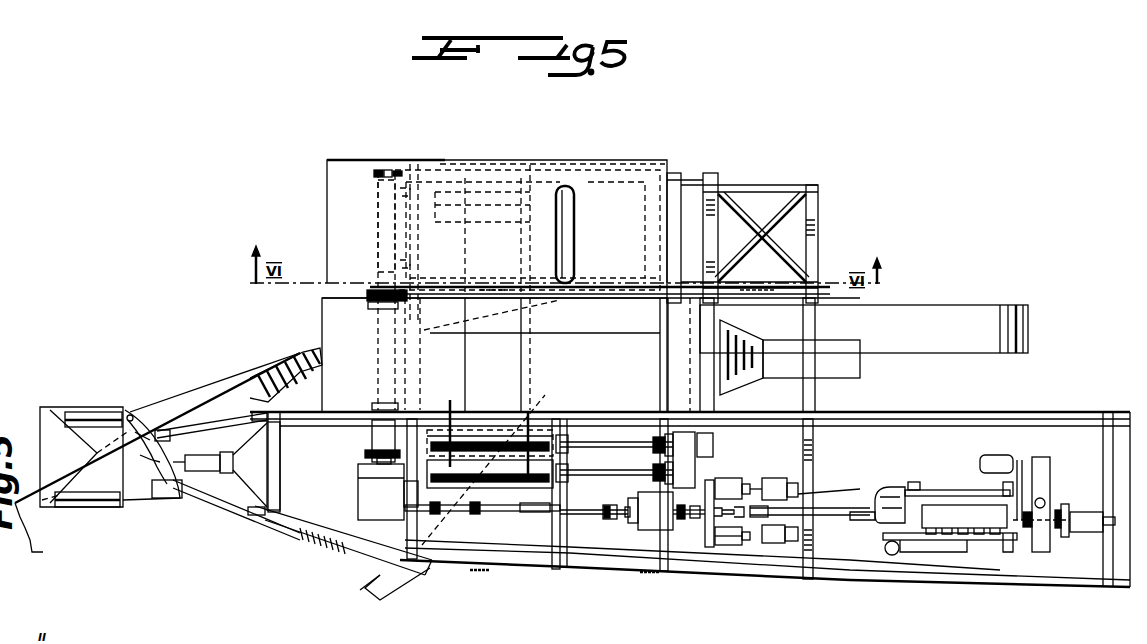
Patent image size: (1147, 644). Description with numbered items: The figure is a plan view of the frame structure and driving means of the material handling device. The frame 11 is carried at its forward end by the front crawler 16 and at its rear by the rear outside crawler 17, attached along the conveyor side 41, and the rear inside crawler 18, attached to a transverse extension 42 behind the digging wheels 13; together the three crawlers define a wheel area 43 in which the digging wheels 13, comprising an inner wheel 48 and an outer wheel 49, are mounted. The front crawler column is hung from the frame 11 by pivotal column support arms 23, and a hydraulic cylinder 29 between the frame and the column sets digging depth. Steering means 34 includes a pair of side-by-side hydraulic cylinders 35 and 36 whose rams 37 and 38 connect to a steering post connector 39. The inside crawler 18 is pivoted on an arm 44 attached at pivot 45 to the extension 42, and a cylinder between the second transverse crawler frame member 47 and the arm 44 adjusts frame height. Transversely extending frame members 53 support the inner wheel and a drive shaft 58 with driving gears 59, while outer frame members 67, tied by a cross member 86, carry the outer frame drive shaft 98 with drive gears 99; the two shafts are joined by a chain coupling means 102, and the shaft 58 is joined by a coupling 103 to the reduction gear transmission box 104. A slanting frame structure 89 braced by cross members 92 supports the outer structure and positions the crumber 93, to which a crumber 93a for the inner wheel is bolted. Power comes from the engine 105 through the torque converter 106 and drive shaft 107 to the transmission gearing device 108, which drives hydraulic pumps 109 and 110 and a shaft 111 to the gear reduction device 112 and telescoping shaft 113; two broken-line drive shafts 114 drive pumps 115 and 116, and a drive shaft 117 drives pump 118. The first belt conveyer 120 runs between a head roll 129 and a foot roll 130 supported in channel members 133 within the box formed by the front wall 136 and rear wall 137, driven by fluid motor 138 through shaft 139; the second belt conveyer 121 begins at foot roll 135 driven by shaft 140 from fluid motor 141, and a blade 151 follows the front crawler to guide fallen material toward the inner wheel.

The frame 11 is at (665, 582).
The digging wheels 13 is at (322, 323).
The front transporting and propelling means 16 is at (45, 537).
The rear outside crawler 17 is at (848, 582).
The rear inside crawler 18 is at (963, 312).
The column support arms 23 is at (244, 416).
The hydraulic cylinder 29 is at (205, 472).
The steering means 34 is at (86, 400).
The hydraulic cylinder 35 is at (100, 412).
The hydraulic cylinder 36 is at (92, 510).
The ram 37 is at (130, 409).
The ram 38 is at (165, 500).
The steering post connector 39 is at (143, 438).
The conveyor side 41 is at (600, 570).
The transverse extension 42 is at (714, 411).
The wheel area 43 is at (651, 163).
The arm 44 is at (790, 355).
The pivot 45 is at (722, 330).
The second transverse crawler frame member 47 is at (815, 402).
The inner wheel 48 is at (307, 356).
The outer wheel 49 is at (328, 195).
The transversely extending frame members 53 is at (410, 362).
The drive shaft 58 is at (378, 338).
The driving gears 59 is at (372, 318).
The outer frame members 67 is at (413, 166).
The cross member 86 is at (492, 170).
The slanting frame structure 89 is at (708, 244).
The cross members 92 is at (785, 220).
The crumber 93 is at (672, 175).
The crumber 93a is at (660, 402).
The outer frame drive shaft 98 is at (385, 229).
The drive gears 99 is at (383, 170).
The coupling means 102 is at (372, 296).
The coupling 103 is at (366, 453).
The reduction gear transmission box 104 is at (358, 501).
The internal combustion engine 105 is at (943, 490).
The torque converter 106 is at (884, 490).
The drive shaft 107 is at (872, 516).
The transmission gearing device 108 is at (732, 478).
The hydraulic pump 109 is at (760, 478).
The hydraulic pump 110 is at (726, 545).
The shaft 111 is at (696, 522).
The gear reduction device 112 is at (632, 511).
The telescoping shaft 113 is at (486, 512).
The drive shafts 114 is at (823, 508).
The hydraulic pump 115 is at (766, 478).
The hydraulic pump 116 is at (773, 543).
The drive shaft 117 is at (1028, 530).
The hydraulic pump 118 is at (1092, 532).
The first belt conveyer 120 is at (489, 430).
The second belt conveyer 121 is at (537, 498).
The head roll 129 is at (440, 430).
The foot roll 130 is at (454, 222).
The channel member 133 is at (428, 378).
The foot roll 135 is at (472, 491).
The front wall 136 is at (462, 240).
The rear wall 137 is at (530, 260).
The fluid motor 138 is at (683, 432).
The shaft 139 is at (626, 442).
The shaft 140 is at (640, 475).
The fluid motor 141 is at (673, 476).
The blade 151 is at (370, 580).